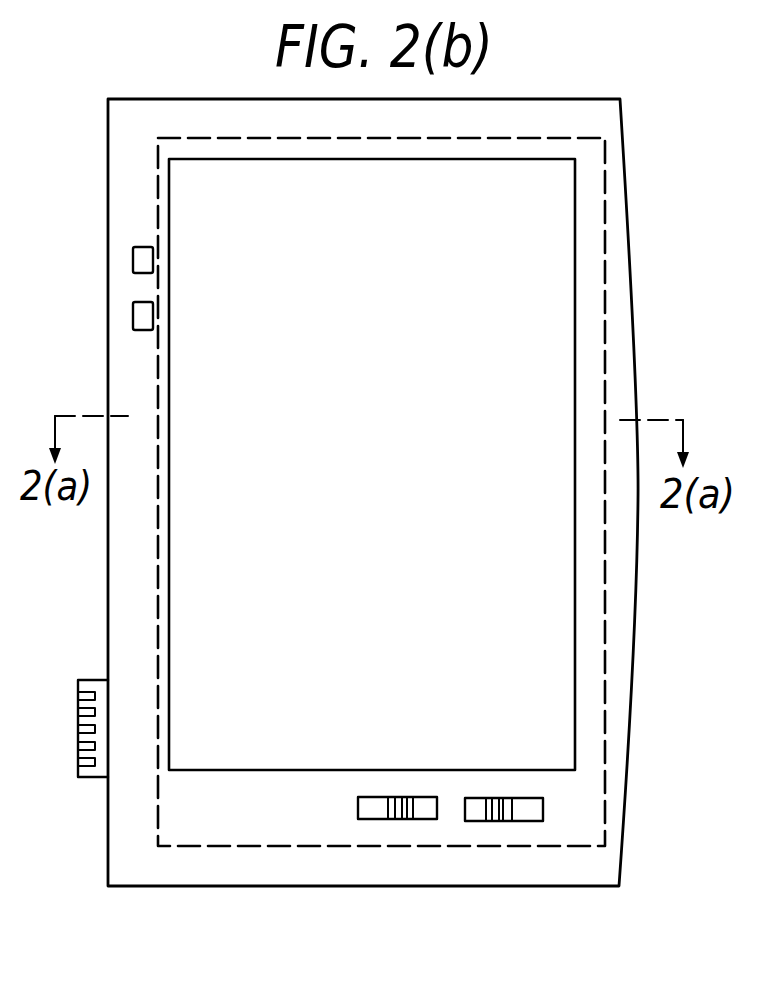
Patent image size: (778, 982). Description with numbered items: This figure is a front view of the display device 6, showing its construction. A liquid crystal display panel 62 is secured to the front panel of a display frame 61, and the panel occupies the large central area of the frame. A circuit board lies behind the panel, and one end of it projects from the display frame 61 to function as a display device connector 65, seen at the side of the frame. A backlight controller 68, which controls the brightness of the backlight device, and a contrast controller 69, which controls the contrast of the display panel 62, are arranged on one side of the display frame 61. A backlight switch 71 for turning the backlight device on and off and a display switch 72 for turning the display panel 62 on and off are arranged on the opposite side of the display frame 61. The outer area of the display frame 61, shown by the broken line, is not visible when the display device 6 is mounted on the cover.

The display device 6 is at (648, 568).
The display frame 61 is at (598, 121).
The liquid crystal display panel 62 is at (541, 215).
The display device connector 65 is at (92, 778).
The backlight controller 68 is at (518, 821).
The contrast controller 69 is at (420, 819).
The backlight switch 71 is at (135, 252).
The display switch 72 is at (137, 315).